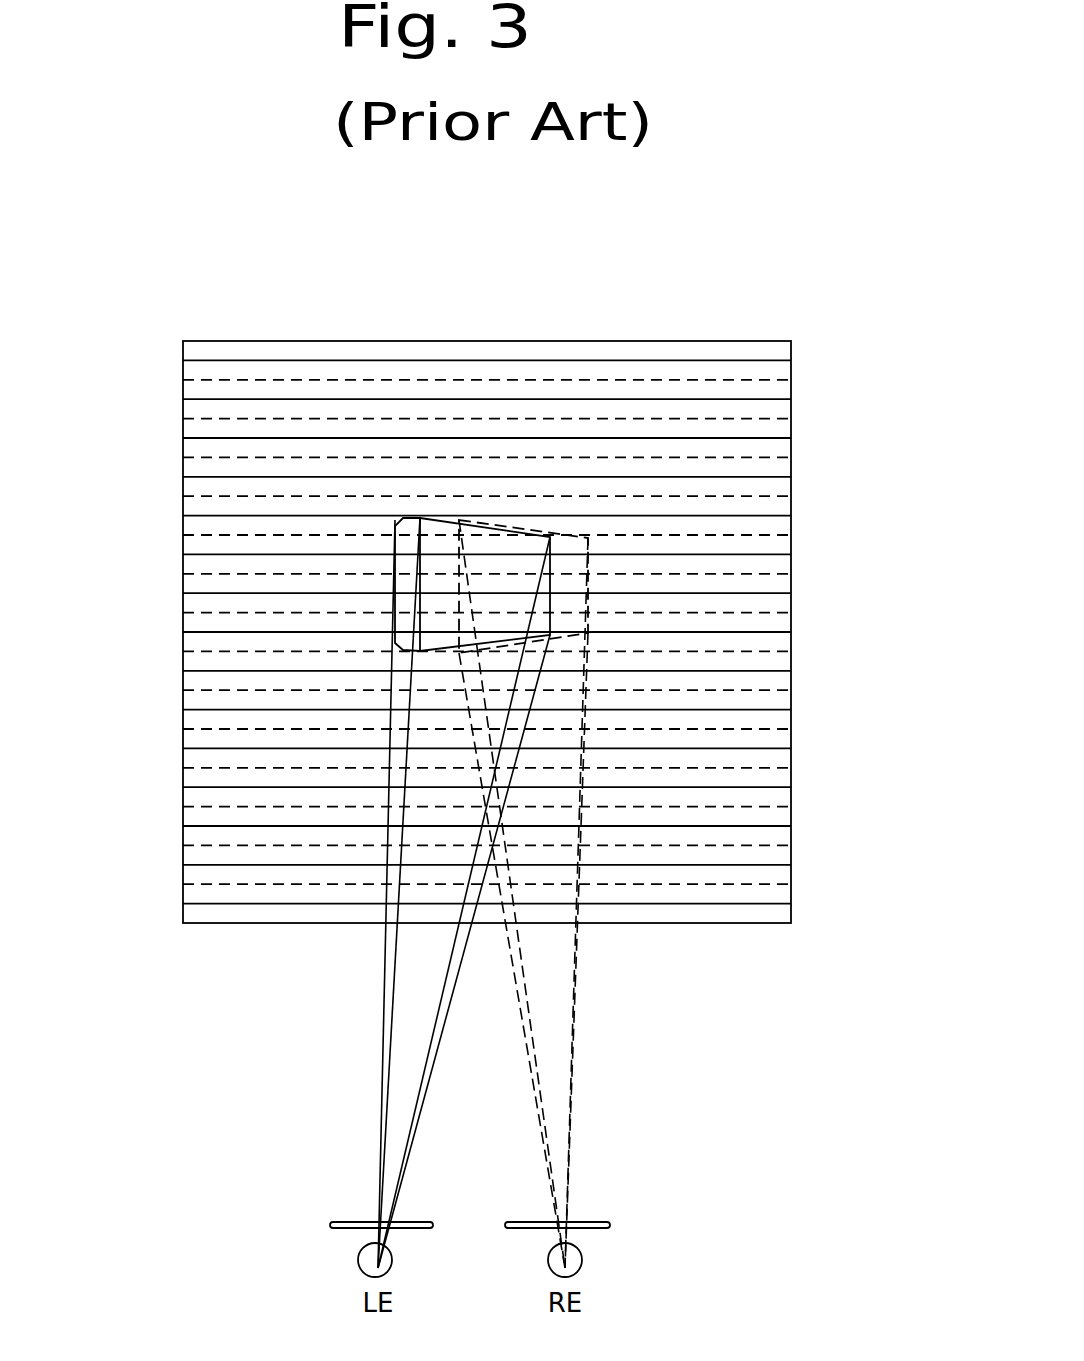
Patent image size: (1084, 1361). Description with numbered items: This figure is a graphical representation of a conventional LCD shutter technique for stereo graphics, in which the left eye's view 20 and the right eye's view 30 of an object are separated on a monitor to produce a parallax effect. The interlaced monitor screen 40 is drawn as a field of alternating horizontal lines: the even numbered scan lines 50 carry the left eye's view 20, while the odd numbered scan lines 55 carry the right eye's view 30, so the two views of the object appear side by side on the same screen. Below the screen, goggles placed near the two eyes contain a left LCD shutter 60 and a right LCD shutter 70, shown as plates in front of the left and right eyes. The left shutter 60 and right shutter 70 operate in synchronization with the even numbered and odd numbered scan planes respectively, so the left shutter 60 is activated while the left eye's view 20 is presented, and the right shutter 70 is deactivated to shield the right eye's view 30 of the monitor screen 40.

The left eye's view 20 is at (395, 562).
The right eye's view 30 is at (590, 548).
The interlaced monitor screen 40 is at (182, 795).
The even numbered scan lines 50 is at (660, 399).
The odd numbered scan lines 55 is at (752, 418).
The left LCD shutter 60 is at (328, 1228).
The right LCD shutter 70 is at (610, 1225).